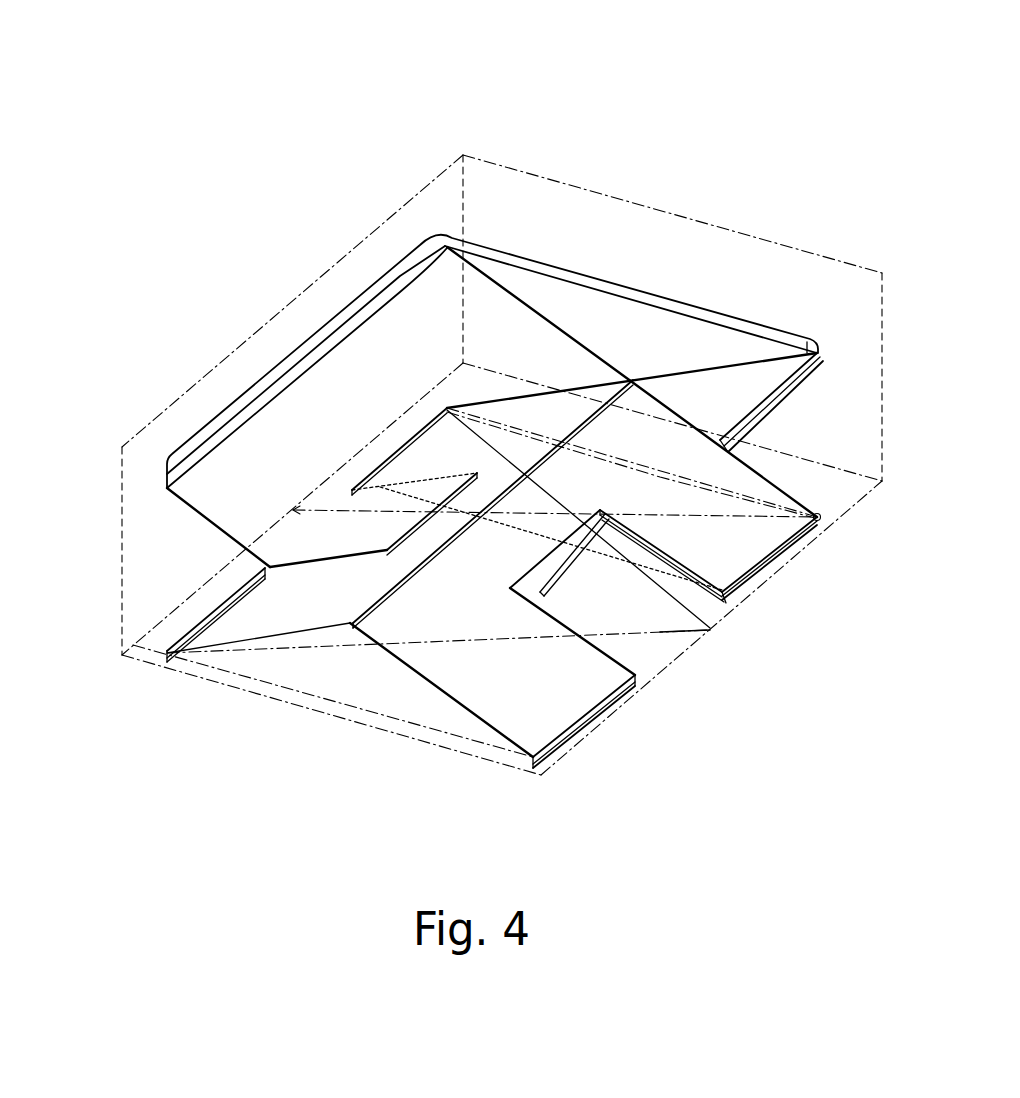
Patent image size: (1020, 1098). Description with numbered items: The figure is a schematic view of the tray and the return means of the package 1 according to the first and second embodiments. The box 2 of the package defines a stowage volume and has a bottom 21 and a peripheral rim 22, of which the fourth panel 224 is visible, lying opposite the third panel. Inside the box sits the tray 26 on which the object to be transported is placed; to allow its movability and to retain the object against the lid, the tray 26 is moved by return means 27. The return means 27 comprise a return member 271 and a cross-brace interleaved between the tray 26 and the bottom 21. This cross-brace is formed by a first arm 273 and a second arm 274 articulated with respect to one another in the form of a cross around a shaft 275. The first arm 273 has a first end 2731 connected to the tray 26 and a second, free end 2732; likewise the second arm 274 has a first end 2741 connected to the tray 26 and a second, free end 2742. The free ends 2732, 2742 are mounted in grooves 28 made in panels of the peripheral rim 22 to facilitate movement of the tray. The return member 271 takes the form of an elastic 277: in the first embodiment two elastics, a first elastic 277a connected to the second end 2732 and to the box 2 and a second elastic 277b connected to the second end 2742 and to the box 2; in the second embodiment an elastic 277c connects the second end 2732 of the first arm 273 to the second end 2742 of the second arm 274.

The package 1 is at (452, 76).
The box 2 is at (222, 354).
The bottom 21 is at (220, 680).
The peripheral rim 22 is at (109, 489).
The fourth panel 224 is at (133, 578).
The tray 26 is at (513, 257).
The return means 27 is at (343, 675).
The grooves 28 is at (382, 712).
The return member 271 is at (291, 660).
The first arm 273 is at (732, 352).
The second arm 274 is at (567, 316).
The shaft 275 is at (642, 363).
The elastic 277 is at (438, 641).
The first elastic 277a is at (676, 648).
The second elastic 277b is at (466, 710).
The elastic 277c is at (420, 478).
The first end 2731 is at (805, 395).
The second end 2732 is at (165, 631).
The first end 2741 is at (217, 409).
The second end 2742 is at (605, 732).